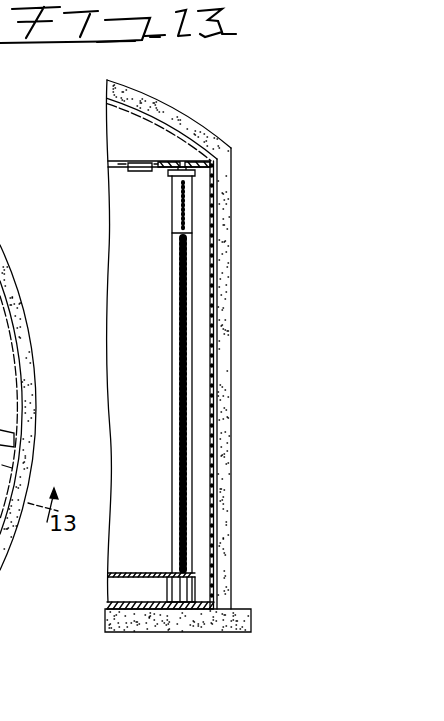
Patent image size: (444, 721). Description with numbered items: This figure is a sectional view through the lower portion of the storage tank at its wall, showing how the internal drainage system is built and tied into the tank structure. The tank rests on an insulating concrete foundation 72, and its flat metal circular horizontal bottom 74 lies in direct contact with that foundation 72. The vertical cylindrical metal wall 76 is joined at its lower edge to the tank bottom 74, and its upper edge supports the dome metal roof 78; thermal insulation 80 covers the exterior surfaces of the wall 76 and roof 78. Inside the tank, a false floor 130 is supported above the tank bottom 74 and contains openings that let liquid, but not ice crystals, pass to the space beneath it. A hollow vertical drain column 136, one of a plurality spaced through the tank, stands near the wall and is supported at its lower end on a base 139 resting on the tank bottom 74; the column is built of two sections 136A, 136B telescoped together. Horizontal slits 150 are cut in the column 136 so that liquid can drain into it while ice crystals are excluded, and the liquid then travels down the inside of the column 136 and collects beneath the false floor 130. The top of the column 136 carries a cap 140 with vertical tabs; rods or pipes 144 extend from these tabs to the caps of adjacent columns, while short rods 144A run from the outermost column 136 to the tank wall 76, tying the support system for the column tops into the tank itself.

The insulating concrete foundation 72 is at (173, 625).
The tank bottom 74 is at (125, 603).
The wall 76 is at (213, 315).
The dome metal roof 78 is at (153, 110).
The thermal insulation 80 is at (222, 250).
The false floor 130 is at (140, 572).
The drain column 136 is at (199, 374).
The column section 136A is at (172, 194).
The column section 136B is at (172, 390).
The column base 139 is at (188, 592).
The cap 140 is at (172, 173).
The rods or pipes 144 is at (120, 163).
The short rods 144A is at (196, 162).
The horizontal slits 150 is at (183, 448).